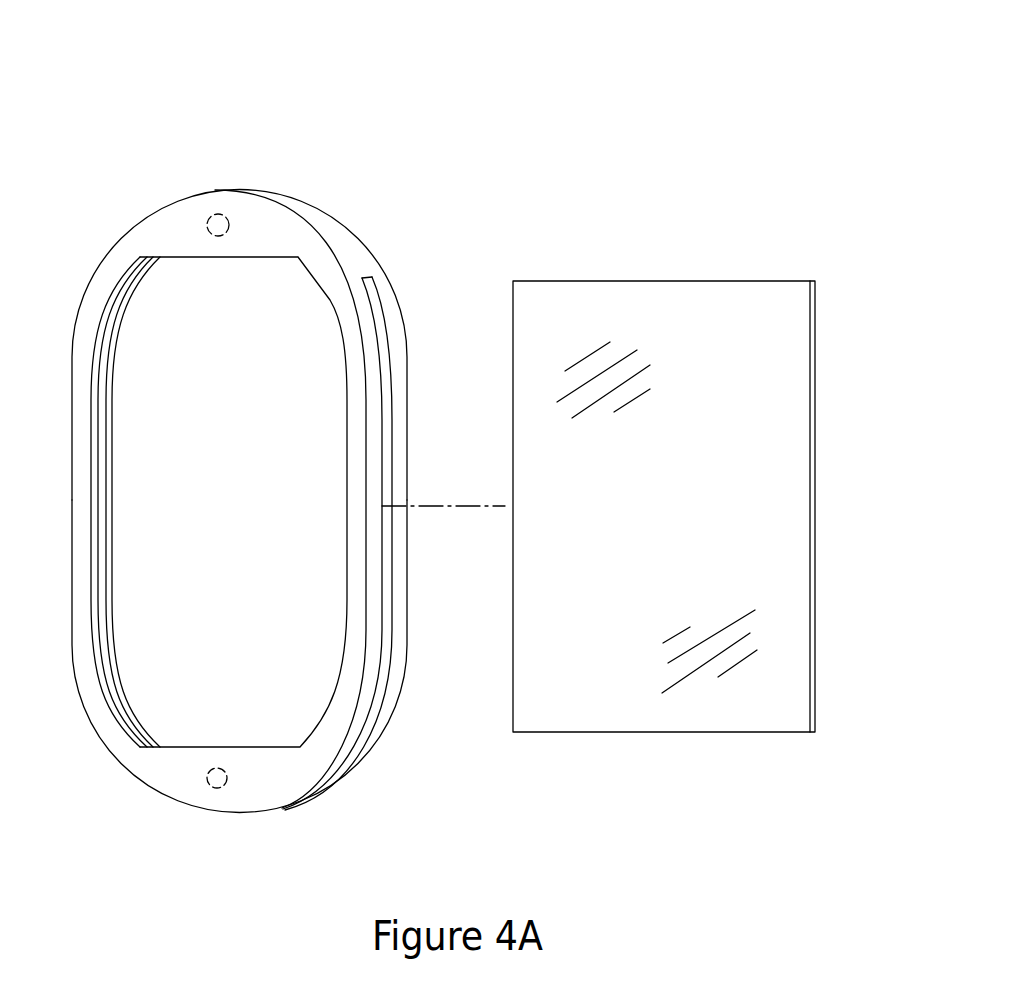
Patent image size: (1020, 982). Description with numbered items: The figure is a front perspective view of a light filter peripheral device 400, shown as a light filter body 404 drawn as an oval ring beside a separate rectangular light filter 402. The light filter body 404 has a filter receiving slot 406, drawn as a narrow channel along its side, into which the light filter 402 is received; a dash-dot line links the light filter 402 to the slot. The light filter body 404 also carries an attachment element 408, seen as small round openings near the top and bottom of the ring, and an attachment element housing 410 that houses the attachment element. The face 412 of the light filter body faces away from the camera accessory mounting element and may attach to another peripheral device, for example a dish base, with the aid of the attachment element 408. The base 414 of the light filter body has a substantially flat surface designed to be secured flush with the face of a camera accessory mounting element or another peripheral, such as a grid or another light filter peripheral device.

The light filter peripheral device 400 is at (616, 83).
The light filter 402 is at (727, 303).
The light filter body 404 is at (353, 231).
The filter receiving slot 406 is at (386, 349).
The attachment element 408 is at (206, 784).
The attachment element housing 410 is at (285, 785).
The face 412 is at (106, 722).
The base 414 is at (358, 765).